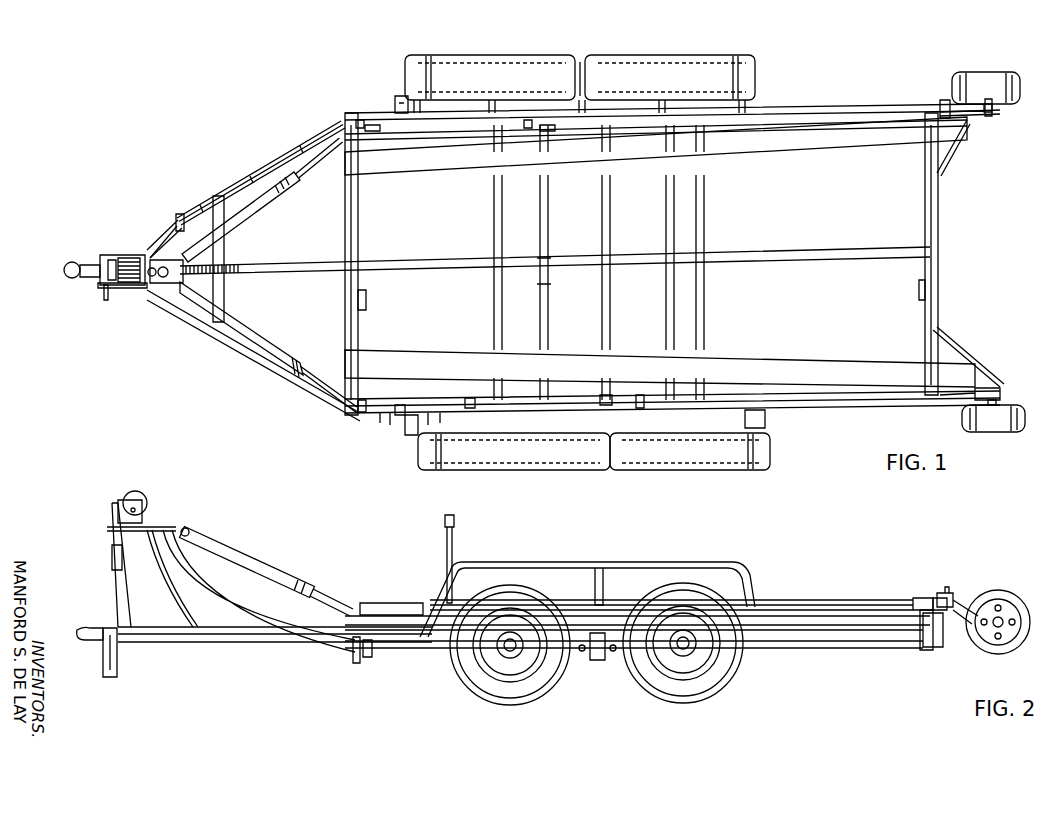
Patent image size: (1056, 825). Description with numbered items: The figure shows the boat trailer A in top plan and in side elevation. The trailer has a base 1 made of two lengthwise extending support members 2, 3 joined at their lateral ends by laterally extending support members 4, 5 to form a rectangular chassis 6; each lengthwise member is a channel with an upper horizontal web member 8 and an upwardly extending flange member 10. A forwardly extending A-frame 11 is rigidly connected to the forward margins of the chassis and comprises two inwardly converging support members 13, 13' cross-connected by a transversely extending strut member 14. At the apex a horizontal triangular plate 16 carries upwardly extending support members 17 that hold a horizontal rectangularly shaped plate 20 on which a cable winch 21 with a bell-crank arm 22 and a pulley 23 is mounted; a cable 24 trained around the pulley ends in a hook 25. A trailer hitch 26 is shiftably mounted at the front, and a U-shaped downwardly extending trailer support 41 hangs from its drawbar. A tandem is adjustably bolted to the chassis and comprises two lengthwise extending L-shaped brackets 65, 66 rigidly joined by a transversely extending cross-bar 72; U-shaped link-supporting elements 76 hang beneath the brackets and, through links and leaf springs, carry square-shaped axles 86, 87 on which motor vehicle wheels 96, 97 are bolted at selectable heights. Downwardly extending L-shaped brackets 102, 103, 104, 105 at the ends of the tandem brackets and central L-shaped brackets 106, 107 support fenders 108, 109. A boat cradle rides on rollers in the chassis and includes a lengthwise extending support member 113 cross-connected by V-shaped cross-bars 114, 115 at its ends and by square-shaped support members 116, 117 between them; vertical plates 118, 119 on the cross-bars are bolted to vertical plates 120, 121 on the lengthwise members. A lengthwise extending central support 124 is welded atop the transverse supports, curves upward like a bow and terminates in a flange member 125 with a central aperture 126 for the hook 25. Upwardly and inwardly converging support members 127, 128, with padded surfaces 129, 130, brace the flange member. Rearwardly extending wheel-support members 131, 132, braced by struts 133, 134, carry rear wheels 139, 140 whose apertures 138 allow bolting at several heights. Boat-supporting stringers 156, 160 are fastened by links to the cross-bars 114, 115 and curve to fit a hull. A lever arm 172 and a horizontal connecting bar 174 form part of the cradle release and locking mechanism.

In FIG. 2, the base 1 is at (873, 628).
In FIG. 1, the lengthwise extending support member 2 is at (890, 406).
In FIG. 2, the lengthwise extending support member 2 is at (827, 628).
In FIG. 1, the lengthwise extending support member 3 is at (945, 110).
In FIG. 1, the laterally extending support member 4 is at (939, 280).
In FIG. 2, the laterally extending support member 4 is at (100, 600).
In FIG. 1, the laterally extending support member 5 is at (345, 303).
In FIG. 2, the laterally extending support member 5 is at (350, 658).
In FIG. 1, the rectangular chassis 6 is at (387, 120).
In FIG. 2, the rectangular chassis 6 is at (863, 592).
In FIG. 2, the upper horizontal web member 8 is at (683, 597).
In FIG. 2, the upwardly extending flange member 10 is at (810, 600).
In FIG. 1, the A-frame 11 is at (226, 187).
In FIG. 2, the A-frame 11 is at (216, 645).
In FIG. 1, the forwardly extending inwardly converging support member 13 is at (563, 355).
In FIG. 1, the forwardly extending inwardly converging support member 13' is at (175, 218).
In FIG. 1, the transversely extending strut member 14 is at (226, 290).
In FIG. 1, the horizontal triangular plate 16 is at (146, 244).
In FIG. 1, the upwardly extending support member 17 is at (905, 112).
In FIG. 1, the horizontal rectangularly shaped plate 20 is at (135, 289).
In FIG. 2, the cable winch 21 is at (127, 495).
In FIG. 1, the bell-crank arm 22 is at (105, 300).
In FIG. 2, the bell-crank arm 22 is at (110, 525).
In FIG. 2, the pulley 23 is at (150, 505).
In FIG. 1, the cable 24 is at (122, 258).
In FIG. 1, the hook 25 is at (152, 285).
In FIG. 2, the hook 25 is at (190, 535).
In FIG. 1, the trailer hitch 26 is at (66, 275).
In FIG. 2, the trailer hitch 26 is at (76, 631).
In FIG. 2, the trailer support 41 is at (117, 677).
In FIG. 1, the lengthwise extending L-shaped bracket 65 is at (470, 398).
In FIG. 1, the lengthwise extending L-shaped bracket 66 is at (487, 142).
In FIG. 1, the transversely extending cross-bar 72 is at (611, 305).
In FIG. 2, the link-supporting element 76 is at (600, 660).
In FIG. 1, the transversely extending square-shaped axle 86 is at (494, 225).
In FIG. 1, the transversely extending square-shaped axle 87 is at (666, 218).
In FIG. 2, the motor vehicle wheel 96 is at (475, 690).
In FIG. 2, the motor vehicle wheel 97 is at (730, 680).
In FIG. 1, the downwardly extending L-shaped bracket 102 is at (412, 438).
In FIG. 1, the downwardly extending L-shaped bracket 103 is at (766, 423).
In FIG. 1, the downwardly extending L-shaped bracket 104 is at (579, 103).
In FIG. 1, the downwardly extending L-shaped bracket 105 is at (398, 103).
In FIG. 1, the L-shaped bracket 106 is at (603, 447).
In FIG. 1, the L-shaped bracket 107 is at (590, 98).
In FIG. 1, the fender 108 is at (570, 465).
In FIG. 2, the fender 108 is at (748, 570).
In FIG. 1, the fender 109 is at (562, 50).
In FIG. 1, the lengthwise extending support member 113 is at (790, 112).
In FIG. 1, the cross-bar 114 is at (366, 299).
In FIG. 2, the cross-bar 114 is at (368, 658).
In FIG. 1, the cross-bar 115 is at (925, 291).
In FIG. 2, the cross-bar 115 is at (921, 648).
In FIG. 1, the transversely extending square-shaped cross-bar 116 is at (548, 305).
In FIG. 1, the transversely extending square-shaped cross-bar 117 is at (704, 222).
In FIG. 1, the vertical plate 118 is at (362, 402).
In FIG. 1, the vertical plate 119 is at (372, 131).
In FIG. 2, the vertical plate 119 is at (112, 557).
In FIG. 1, the vertical plate 120 is at (620, 413).
In FIG. 2, the vertical plate 120 is at (164, 578).
In FIG. 1, the vertical plate 121 is at (358, 122).
In FIG. 1, the central support 124 is at (878, 250).
In FIG. 2, the central support 124 is at (302, 650).
In FIG. 1, the flange member 125 is at (165, 280).
In FIG. 2, the flange member 125 is at (178, 528).
In FIG. 1, the central aperture 126 is at (153, 278).
In FIG. 1, the upwardly and inwardly converging support member 127 is at (330, 401).
In FIG. 2, the upwardly and inwardly converging support member 127 is at (328, 597).
In FIG. 1, the upwardly and inwardly converging support member 128 is at (296, 168).
In FIG. 1, the padded surface 129 is at (285, 178).
In FIG. 1, the padded surface 130 is at (262, 340).
In FIG. 2, the padded surface 130 is at (268, 570).
In FIG. 1, the rearwardly extending wheel-support member 131 is at (1002, 393).
In FIG. 1, the rearwardly extending wheel-support member 132 is at (1002, 113).
In FIG. 1, the strut 133 is at (966, 366).
In FIG. 1, the strut 134 is at (960, 150).
In FIG. 2, the vertically aligned apertures 138 is at (1002, 600).
In FIG. 1, the rear wheel 139 is at (1015, 432).
In FIG. 1, the rear wheel 140 is at (1010, 78).
In FIG. 1, the stringer 156 is at (790, 150).
In FIG. 1, the stringer 160 is at (797, 362).
In FIG. 2, the lever arm 172 is at (453, 542).
In FIG. 2, the horizontal connecting bar 174 is at (400, 603).
In FIG. 1, the boat trailer A is at (158, 208).